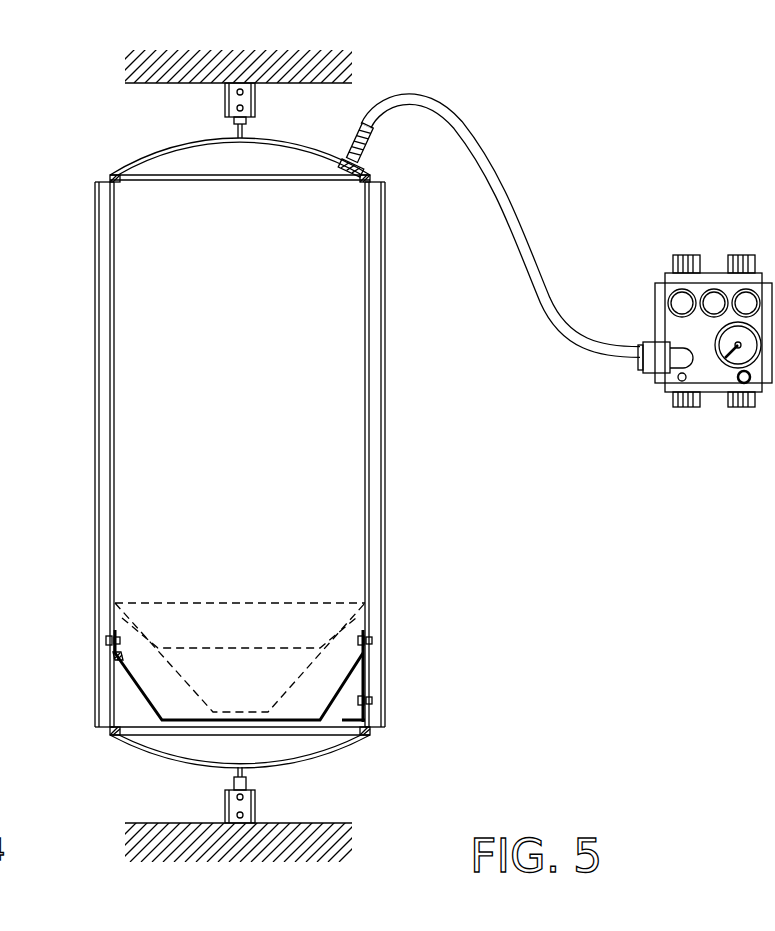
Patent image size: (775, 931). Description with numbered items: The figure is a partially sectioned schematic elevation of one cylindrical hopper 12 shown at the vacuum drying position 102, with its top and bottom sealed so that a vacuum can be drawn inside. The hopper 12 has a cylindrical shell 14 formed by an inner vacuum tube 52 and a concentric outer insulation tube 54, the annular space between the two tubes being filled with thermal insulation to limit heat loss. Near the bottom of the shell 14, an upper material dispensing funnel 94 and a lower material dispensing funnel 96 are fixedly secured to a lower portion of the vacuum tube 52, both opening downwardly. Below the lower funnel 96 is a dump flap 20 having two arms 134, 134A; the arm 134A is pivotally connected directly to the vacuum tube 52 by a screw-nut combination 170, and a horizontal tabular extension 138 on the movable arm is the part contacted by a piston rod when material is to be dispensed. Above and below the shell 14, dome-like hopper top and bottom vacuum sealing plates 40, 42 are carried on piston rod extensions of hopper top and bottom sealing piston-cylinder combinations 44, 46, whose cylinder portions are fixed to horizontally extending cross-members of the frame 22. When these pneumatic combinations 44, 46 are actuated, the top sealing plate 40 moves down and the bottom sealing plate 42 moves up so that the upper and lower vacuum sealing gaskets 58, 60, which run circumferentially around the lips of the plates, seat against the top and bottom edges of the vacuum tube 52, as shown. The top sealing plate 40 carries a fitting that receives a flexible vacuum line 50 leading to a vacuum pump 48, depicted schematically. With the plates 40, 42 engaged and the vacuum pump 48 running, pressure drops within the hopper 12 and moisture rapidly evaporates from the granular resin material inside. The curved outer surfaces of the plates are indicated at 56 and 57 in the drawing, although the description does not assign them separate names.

The cylindrical hopper 12 is at (250, 453).
The cylindrical shell 14 is at (250, 454).
The dump flap 20 is at (178, 714).
The frame 22 is at (358, 61).
The hopper top vacuum sealing plate 40 is at (228, 133).
The hopper bottom vacuum sealing plate 42 is at (278, 775).
The hopper top sealing piston-cylinder combination 44 is at (214, 95).
The hopper bottom sealing piston-cylinder combination 46 is at (268, 806).
The vacuum pump 48 is at (713, 395).
The vacuum line 50 is at (511, 212).
The vacuum tube 52 is at (115, 318).
The insulation tube 54 is at (95, 275).
The dome top surface 56 is at (156, 136).
The bottom dome surface 57 is at (332, 776).
The upper vacuum sealing gasket 58 is at (108, 177).
The lower vacuum sealing gasket 60 is at (372, 735).
The upper material dispensing funnel 94 is at (306, 597).
The lower material dispensing funnel 96 is at (338, 655).
The vacuum drying position 102 is at (397, 534).
The arm 134 is at (345, 690).
The arm 134A is at (118, 682).
The tabular extension 138 is at (368, 714).
The screw-nut combination 170 is at (106, 640).